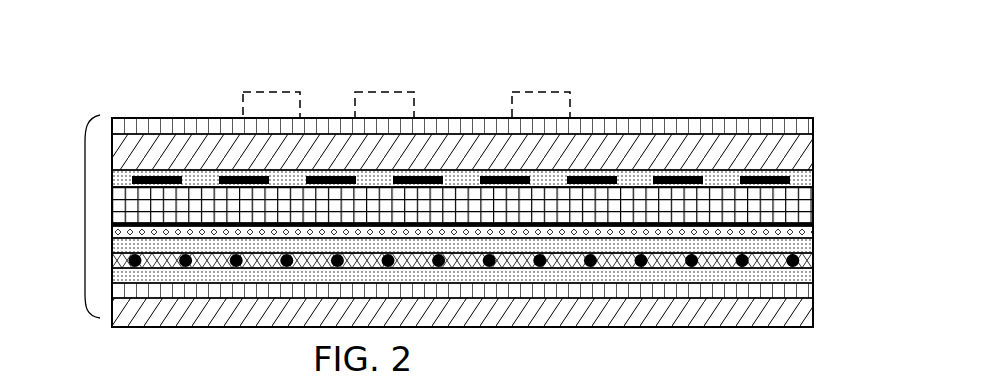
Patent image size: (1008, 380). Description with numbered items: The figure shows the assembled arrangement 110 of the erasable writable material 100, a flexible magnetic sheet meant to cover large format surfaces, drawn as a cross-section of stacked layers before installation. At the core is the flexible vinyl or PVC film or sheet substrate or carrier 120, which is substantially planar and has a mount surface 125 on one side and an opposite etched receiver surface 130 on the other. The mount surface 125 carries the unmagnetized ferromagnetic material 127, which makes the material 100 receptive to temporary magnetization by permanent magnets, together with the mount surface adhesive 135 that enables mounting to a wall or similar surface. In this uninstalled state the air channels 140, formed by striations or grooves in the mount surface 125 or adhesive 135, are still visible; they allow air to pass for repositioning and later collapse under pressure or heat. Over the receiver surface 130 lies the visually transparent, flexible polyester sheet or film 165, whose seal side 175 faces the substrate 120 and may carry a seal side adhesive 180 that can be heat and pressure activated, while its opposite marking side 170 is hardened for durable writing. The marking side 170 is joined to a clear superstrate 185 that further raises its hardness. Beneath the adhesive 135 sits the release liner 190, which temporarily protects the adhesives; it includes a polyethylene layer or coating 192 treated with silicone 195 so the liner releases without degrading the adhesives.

The erasable writable material 100 is at (186, 100).
The assembled arrangement 110 is at (85, 266).
The film or sheet substrate or carrier 120 is at (813, 205).
The mount surface 125 is at (505, 226).
The ferromagnetic material 127 is at (813, 225).
The etched receiver surface 130 is at (813, 183).
The mount surface adhesive 135 is at (813, 243).
The air channels 140 is at (813, 261).
The polyester sheet or film 165 is at (813, 152).
The marking side 170 is at (766, 133).
The seal side 175 is at (813, 172).
The seal side adhesive 180 is at (813, 176).
The clear superstrate 185 is at (712, 118).
The release liner 190 is at (815, 327).
The polyethylene layer or coating 192 is at (813, 297).
The silicone 195 is at (813, 279).